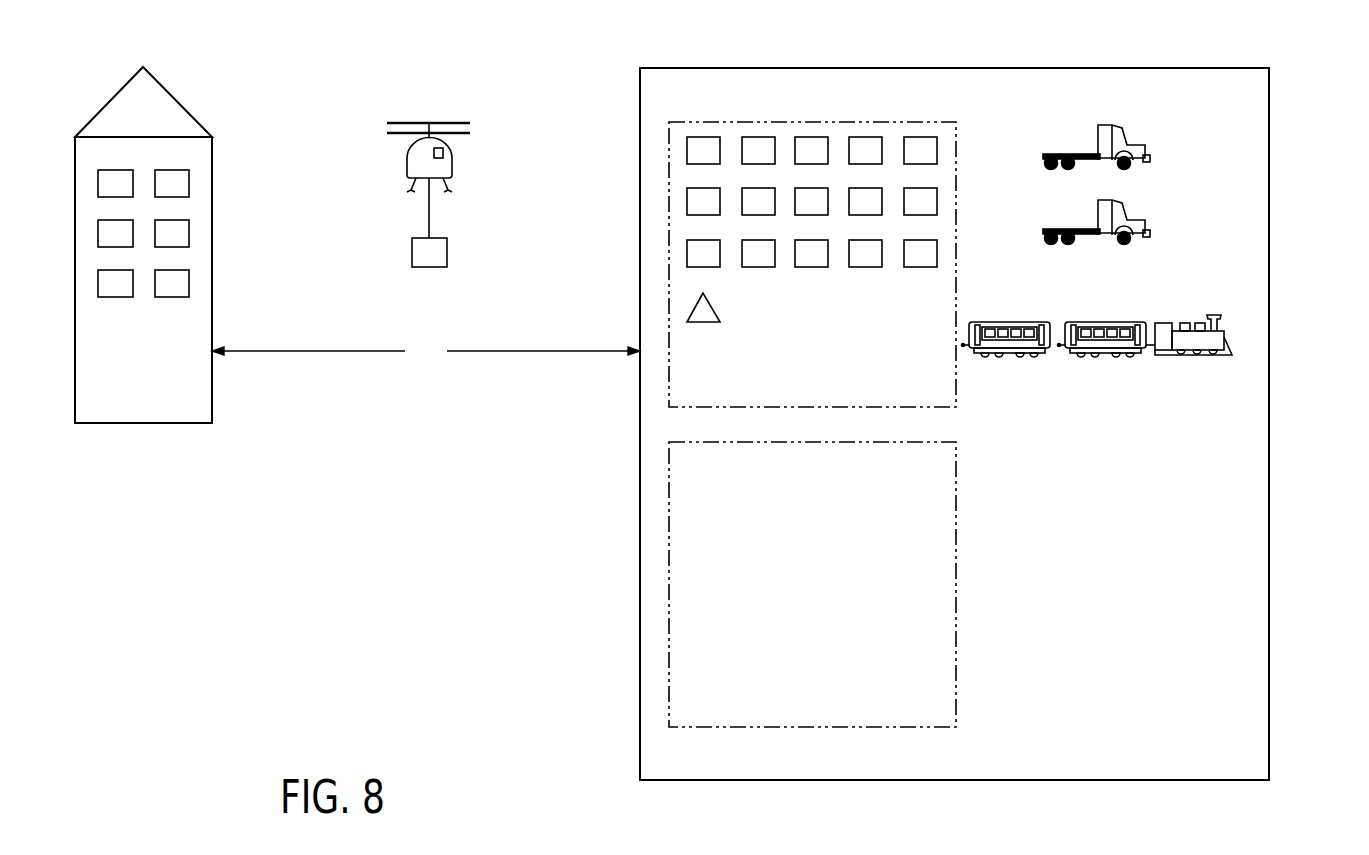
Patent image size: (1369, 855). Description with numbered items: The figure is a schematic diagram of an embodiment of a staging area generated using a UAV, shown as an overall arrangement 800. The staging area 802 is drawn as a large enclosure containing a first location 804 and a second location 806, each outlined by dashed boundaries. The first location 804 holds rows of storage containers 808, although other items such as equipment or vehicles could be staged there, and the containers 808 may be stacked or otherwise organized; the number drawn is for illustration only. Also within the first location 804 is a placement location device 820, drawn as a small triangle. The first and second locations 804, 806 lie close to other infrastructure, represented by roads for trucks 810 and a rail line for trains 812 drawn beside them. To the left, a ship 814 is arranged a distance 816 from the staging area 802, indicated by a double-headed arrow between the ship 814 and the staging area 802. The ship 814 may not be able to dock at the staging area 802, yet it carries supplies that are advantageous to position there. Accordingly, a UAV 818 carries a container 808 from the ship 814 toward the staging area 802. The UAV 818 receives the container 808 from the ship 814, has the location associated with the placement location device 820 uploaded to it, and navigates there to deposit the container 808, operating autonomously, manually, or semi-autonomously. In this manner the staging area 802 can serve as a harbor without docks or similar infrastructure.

The system 800 is at (1241, 36).
The staging area 802 is at (1070, 68).
The first location 804 is at (956, 388).
The second location 806 is at (956, 535).
The storage containers 808 is at (705, 137).
The trucks 810 is at (1170, 177).
The trains 812 is at (1214, 366).
The ship 814 is at (246, 410).
The distance 816 is at (426, 351).
The UAV 818 is at (486, 131).
The placement location device 820 is at (715, 307).